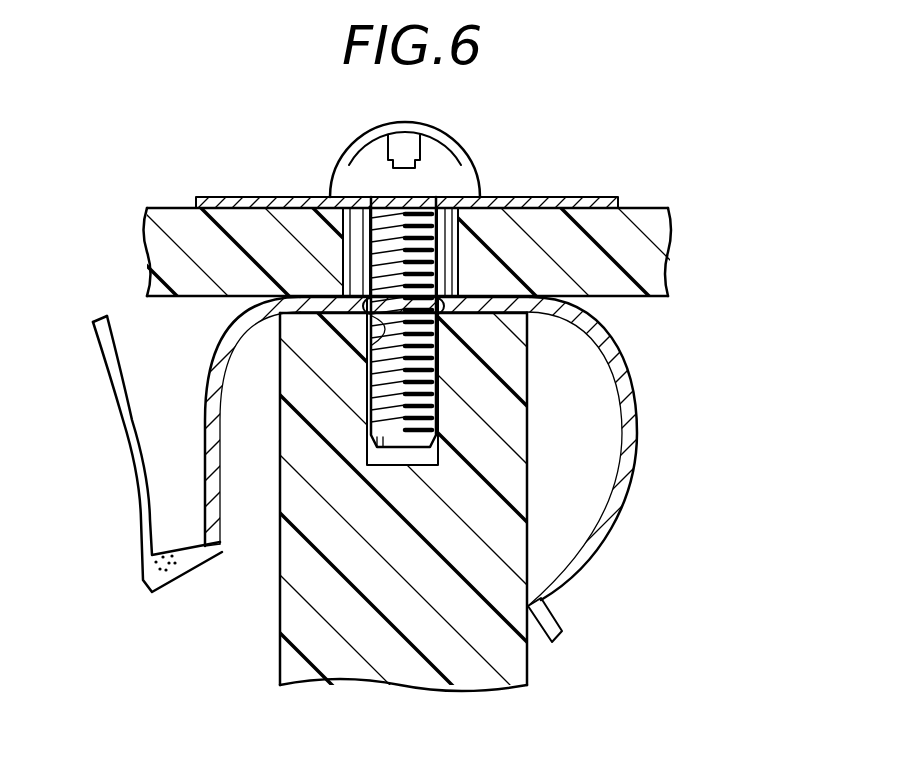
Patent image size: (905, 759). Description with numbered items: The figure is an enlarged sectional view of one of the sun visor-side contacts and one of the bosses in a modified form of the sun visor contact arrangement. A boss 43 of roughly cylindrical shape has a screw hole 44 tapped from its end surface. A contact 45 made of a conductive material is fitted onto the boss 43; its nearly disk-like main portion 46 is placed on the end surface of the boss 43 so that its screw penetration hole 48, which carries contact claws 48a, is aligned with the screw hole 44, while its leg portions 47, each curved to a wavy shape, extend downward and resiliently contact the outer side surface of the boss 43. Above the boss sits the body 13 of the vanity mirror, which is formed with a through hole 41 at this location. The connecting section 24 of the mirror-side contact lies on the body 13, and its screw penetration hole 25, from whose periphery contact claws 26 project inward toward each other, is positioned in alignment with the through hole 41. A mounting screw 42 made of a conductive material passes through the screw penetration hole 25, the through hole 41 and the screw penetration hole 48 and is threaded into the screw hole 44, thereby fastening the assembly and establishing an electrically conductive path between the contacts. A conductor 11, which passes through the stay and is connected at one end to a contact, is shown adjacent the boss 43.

The conductor 11 is at (128, 414).
The body 13 is at (648, 212).
The connecting section 24 is at (222, 202).
The screw penetration hole 25 is at (372, 196).
The contact claws 26 is at (382, 192).
The through holes 41 is at (292, 208).
The mounting screws 42 is at (409, 142).
The bosses 43 is at (520, 655).
The screw holes 44 is at (371, 401).
The contacts 45 is at (452, 379).
The main portion 46 is at (487, 293).
The leg portions 47 is at (632, 452).
The screw penetration hole 48 is at (371, 320).
The contact claws 48a is at (371, 342).